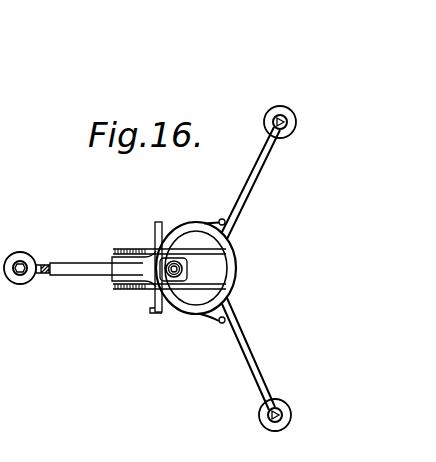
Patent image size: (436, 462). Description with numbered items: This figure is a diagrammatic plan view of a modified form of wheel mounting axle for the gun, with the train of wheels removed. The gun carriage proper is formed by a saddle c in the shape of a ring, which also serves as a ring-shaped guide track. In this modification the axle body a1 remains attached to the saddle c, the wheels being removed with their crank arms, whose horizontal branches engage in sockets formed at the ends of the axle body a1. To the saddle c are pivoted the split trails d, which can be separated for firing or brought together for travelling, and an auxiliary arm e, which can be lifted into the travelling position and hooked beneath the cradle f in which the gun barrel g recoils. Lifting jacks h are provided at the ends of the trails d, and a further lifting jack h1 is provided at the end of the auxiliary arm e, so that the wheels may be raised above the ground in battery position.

The axle body a1 is at (158, 222).
The saddle c is at (237, 270).
The split trails d is at (243, 198).
The arm e is at (83, 268).
The cradle f is at (147, 289).
The gun barrel g is at (183, 268).
The lifting jacks h is at (235, 423).
The lifting jack h1 is at (31, 259).